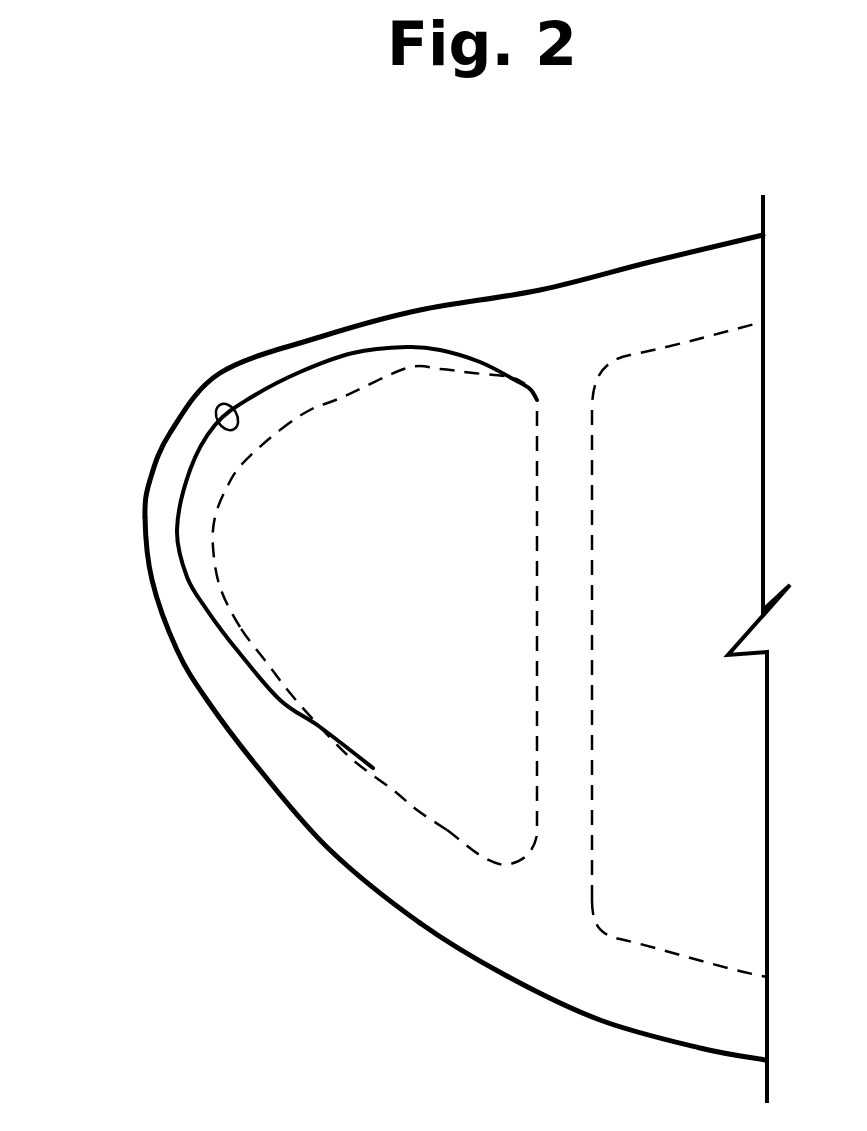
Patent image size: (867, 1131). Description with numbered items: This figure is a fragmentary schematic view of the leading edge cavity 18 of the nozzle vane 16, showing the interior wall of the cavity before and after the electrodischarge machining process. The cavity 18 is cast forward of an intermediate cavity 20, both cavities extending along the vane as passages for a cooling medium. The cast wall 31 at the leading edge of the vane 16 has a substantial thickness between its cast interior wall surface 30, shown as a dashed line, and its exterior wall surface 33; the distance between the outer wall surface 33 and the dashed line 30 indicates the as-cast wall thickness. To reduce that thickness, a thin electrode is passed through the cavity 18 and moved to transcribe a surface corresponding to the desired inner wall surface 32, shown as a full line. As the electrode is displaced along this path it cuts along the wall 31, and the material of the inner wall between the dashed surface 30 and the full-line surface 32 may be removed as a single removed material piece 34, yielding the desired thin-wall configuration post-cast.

The nozzle vane 16 is at (505, 977).
The leading edge cavity 18 is at (301, 615).
The intermediate cavity 20 is at (698, 758).
The cast interior wall surface 30 is at (213, 523).
The wall 31 is at (225, 690).
The desired inner wall surface 32 is at (222, 408).
The exterior wall surface 33 is at (145, 490).
The removed material piece 34 is at (345, 367).